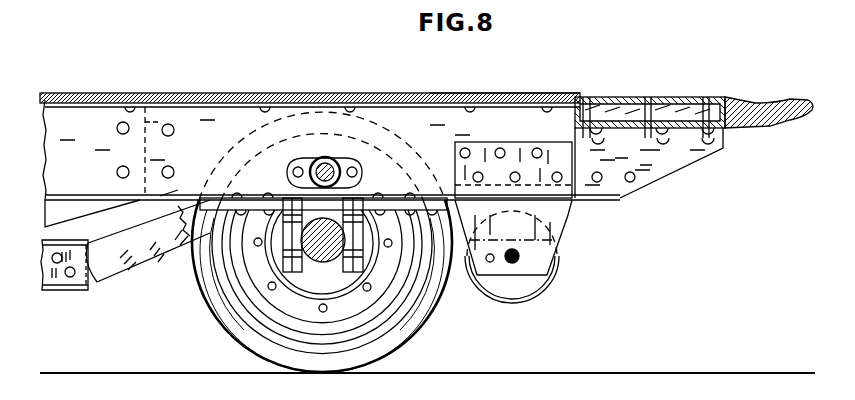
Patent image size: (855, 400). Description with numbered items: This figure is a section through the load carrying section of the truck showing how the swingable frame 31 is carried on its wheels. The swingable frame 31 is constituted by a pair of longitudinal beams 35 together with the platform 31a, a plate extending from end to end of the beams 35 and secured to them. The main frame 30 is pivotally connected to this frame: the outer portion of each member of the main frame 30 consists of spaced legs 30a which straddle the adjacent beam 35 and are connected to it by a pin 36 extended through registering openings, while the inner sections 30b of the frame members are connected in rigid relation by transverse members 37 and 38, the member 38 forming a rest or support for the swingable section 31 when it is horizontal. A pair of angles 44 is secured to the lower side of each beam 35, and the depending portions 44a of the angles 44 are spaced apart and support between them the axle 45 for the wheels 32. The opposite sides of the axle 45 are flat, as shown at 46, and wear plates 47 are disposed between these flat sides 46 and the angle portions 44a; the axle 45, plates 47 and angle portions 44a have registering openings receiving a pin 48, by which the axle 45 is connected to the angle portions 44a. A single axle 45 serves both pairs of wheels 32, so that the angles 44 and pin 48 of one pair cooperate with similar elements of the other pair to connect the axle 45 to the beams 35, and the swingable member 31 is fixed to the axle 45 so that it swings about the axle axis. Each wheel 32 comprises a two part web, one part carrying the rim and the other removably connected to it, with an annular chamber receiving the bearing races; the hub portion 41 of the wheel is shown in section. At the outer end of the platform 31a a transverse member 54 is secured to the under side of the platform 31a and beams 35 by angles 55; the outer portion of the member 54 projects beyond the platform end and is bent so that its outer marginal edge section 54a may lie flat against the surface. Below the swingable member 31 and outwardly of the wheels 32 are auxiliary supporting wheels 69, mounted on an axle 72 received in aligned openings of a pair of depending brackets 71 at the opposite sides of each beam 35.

The main frame 30 is at (148, 246).
The spaced legs 30a is at (193, 194).
The inner sections 30b is at (94, 292).
The swingable frame 31 is at (386, 144).
The platform 31a is at (345, 101).
The wheels 32 is at (411, 338).
The longitudinal beams 35 is at (483, 124).
The pin 36 is at (326, 158).
The transverse members 37 is at (59, 292).
The transverse member 38 is at (109, 214).
The wheel hub 41 is at (297, 288).
The angles 44 is at (262, 196).
The depending portions 44a is at (247, 328).
The axle 45 is at (313, 275).
The flat sides 46 is at (336, 208).
The wear plates 47 is at (348, 283).
The pin 48 is at (378, 268).
The transverse member 54 is at (680, 97).
The outer marginal edge section 54a is at (773, 108).
The angles 55 is at (651, 176).
The auxiliary supporting wheels 69 is at (551, 277).
The depending brackets 71 is at (574, 215).
The axle 72 is at (514, 264).